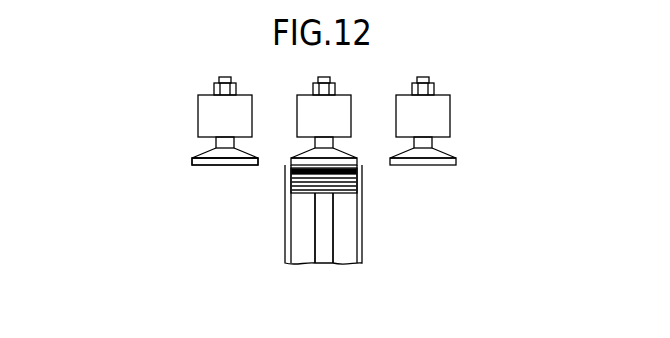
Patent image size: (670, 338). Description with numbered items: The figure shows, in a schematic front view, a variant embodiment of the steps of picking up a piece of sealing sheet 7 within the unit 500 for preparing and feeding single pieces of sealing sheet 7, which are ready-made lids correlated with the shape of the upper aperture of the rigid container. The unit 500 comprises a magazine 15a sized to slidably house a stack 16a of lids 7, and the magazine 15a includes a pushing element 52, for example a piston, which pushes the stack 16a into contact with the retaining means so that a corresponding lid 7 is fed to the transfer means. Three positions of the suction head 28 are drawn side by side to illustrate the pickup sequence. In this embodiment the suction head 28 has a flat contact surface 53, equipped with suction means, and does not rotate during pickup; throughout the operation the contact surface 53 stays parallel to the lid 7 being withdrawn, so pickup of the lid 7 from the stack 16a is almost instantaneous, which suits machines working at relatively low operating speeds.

The suction head 28 is at (204, 153).
The contact surface 53 is at (205, 166).
The unit for preparing and feeding single pieces of sealing sheet 500 is at (214, 207).
The magazine 15a is at (285, 244).
The stack of lids 16a is at (350, 182).
The pushing element 52 is at (323, 248).
The piece of sealing sheet 7 is at (448, 166).